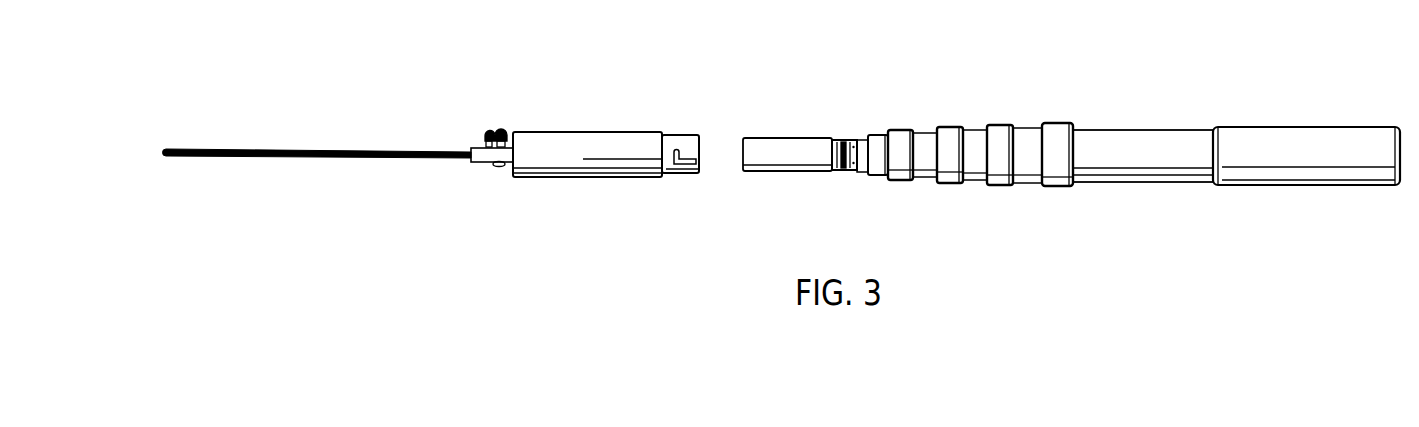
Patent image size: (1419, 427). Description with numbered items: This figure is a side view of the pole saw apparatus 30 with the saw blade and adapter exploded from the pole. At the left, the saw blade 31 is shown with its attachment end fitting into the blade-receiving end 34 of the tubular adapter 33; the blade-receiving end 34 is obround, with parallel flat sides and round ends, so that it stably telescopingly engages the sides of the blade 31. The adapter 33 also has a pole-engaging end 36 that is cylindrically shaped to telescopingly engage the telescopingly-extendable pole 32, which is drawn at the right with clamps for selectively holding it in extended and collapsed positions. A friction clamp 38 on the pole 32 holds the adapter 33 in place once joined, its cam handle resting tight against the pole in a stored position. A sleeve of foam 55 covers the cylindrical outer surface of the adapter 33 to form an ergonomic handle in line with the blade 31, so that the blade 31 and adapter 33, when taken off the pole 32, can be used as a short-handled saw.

The pole saw apparatus 30 is at (1243, 72).
The saw blade 31 is at (270, 149).
The telescopingly-extendable pole 32 is at (1130, 137).
The tubular adapter 33 is at (637, 132).
The blade-receiving end 34 is at (487, 171).
The pole-engaging end 36 is at (686, 178).
The friction clamp 38 is at (847, 137).
The sleeve of foam 55 is at (576, 141).